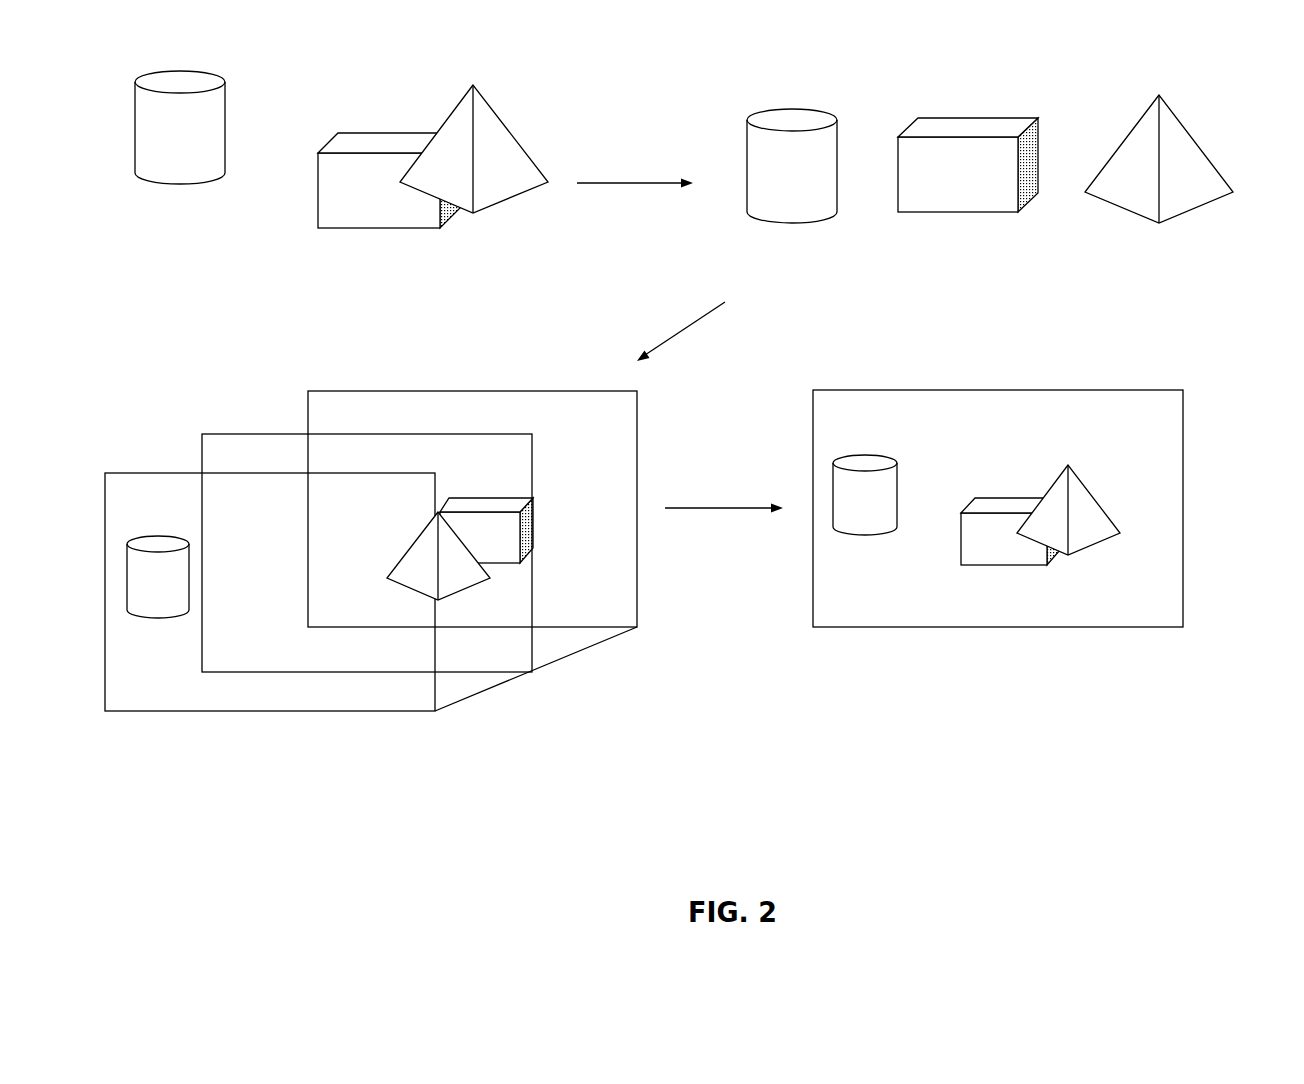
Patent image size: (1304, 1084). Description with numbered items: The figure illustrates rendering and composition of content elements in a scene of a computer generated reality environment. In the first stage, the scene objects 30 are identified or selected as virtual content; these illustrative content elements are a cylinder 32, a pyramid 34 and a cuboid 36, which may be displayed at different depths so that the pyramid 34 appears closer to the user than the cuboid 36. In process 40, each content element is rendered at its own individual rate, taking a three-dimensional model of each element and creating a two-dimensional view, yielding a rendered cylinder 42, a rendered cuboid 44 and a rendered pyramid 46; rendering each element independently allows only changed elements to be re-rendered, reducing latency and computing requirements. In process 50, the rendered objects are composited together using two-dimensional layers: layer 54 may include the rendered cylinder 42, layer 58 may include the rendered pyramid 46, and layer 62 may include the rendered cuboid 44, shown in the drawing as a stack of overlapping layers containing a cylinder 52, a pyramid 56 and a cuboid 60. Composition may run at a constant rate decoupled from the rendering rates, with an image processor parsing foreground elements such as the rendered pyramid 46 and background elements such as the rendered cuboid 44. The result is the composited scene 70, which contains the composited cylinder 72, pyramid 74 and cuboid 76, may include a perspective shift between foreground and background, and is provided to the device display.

The scene objects 30 is at (289, 58).
The cylinder 32 is at (180, 70).
The pyramid 34 is at (466, 91).
The cuboid 36 is at (318, 208).
The process 40 is at (869, 48).
The rendered cylinder 42 is at (792, 108).
The rendered cuboid 44 is at (970, 118).
The rendered pyramid 46 is at (1152, 100).
The process 50 is at (108, 378).
The cylinder layer object 52 is at (165, 537).
The layer 54 is at (168, 473).
The pyramid layer object 56 is at (412, 542).
The layer 58 is at (262, 434).
The box layer object 60 is at (495, 498).
The layer 62 is at (360, 391).
The composited scene 70 is at (908, 390).
The composited cylinder 72 is at (872, 455).
The composited pyramid 74 is at (1050, 478).
The composited box 76 is at (961, 550).